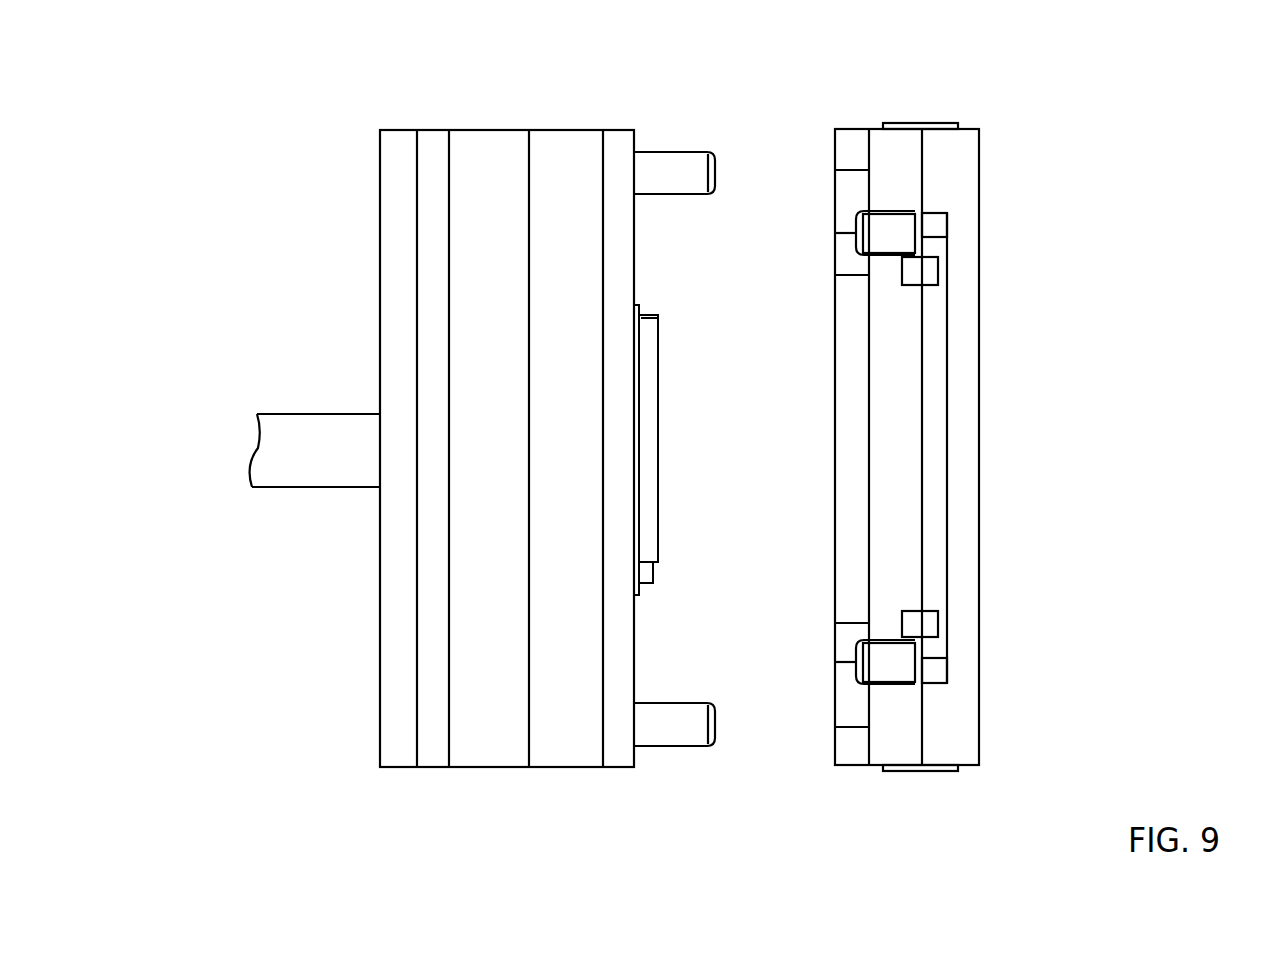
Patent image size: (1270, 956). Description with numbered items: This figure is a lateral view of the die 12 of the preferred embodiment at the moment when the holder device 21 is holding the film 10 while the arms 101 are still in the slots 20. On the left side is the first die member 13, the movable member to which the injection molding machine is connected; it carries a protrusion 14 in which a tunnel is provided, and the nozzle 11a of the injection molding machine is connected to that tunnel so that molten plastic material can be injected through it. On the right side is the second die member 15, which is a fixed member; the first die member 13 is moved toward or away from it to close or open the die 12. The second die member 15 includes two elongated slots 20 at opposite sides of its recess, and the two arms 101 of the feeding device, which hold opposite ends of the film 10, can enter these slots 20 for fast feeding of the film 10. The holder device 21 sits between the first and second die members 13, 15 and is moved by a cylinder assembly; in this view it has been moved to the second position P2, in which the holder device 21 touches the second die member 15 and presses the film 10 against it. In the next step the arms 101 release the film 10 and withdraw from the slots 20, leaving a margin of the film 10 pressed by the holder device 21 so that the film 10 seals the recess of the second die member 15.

The film 10 is at (870, 233).
The arms 101 is at (908, 225).
The elongated slots 20 is at (918, 247).
The holder device 21 is at (825, 522).
The second die member 15 is at (992, 410).
The die 12 is at (737, 124).
The first die member 13 is at (506, 124).
The protrusion 14 is at (653, 415).
The nozzle 11a is at (317, 470).
The second position P2 is at (840, 790).